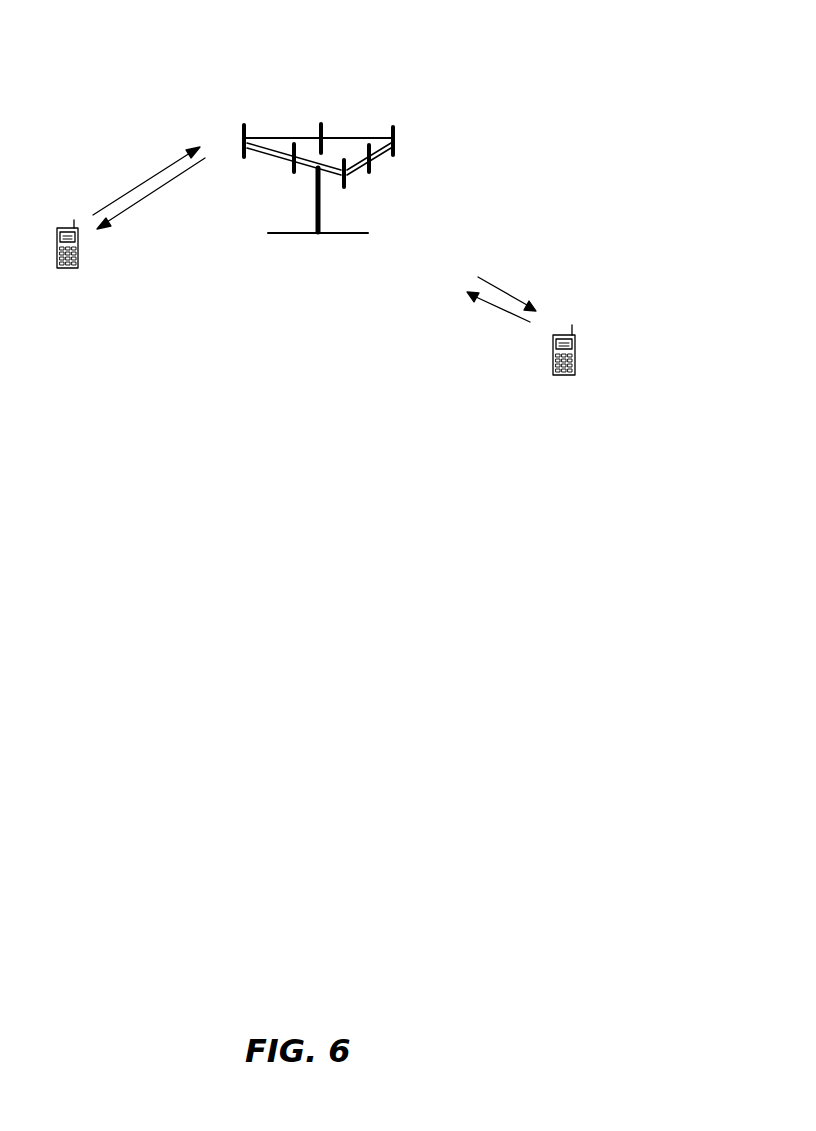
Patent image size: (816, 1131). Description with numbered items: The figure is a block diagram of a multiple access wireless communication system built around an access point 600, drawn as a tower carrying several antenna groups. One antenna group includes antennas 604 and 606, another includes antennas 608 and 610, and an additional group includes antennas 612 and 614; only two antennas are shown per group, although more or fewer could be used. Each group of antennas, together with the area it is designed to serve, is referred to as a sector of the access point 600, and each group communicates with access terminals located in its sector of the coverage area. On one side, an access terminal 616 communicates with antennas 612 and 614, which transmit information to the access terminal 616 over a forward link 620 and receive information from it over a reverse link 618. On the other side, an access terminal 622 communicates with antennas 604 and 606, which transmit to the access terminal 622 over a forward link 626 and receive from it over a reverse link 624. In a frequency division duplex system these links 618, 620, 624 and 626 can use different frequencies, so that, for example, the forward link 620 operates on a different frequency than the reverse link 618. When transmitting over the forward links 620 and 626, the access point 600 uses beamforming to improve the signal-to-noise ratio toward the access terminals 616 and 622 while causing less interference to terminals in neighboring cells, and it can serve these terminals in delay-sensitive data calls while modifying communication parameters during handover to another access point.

The access point 600 is at (302, 233).
The antenna 604 is at (346, 187).
The antenna 606 is at (371, 172).
The antenna 608 is at (395, 151).
The antenna 610 is at (321, 125).
The antenna 612 is at (247, 137).
The antenna 614 is at (294, 172).
The access terminal 616 is at (68, 227).
The reverse link 618 is at (146, 181).
The forward link 620 is at (158, 190).
The access terminal 622 is at (567, 330).
The reverse link 624 is at (490, 300).
The forward link 626 is at (512, 294).